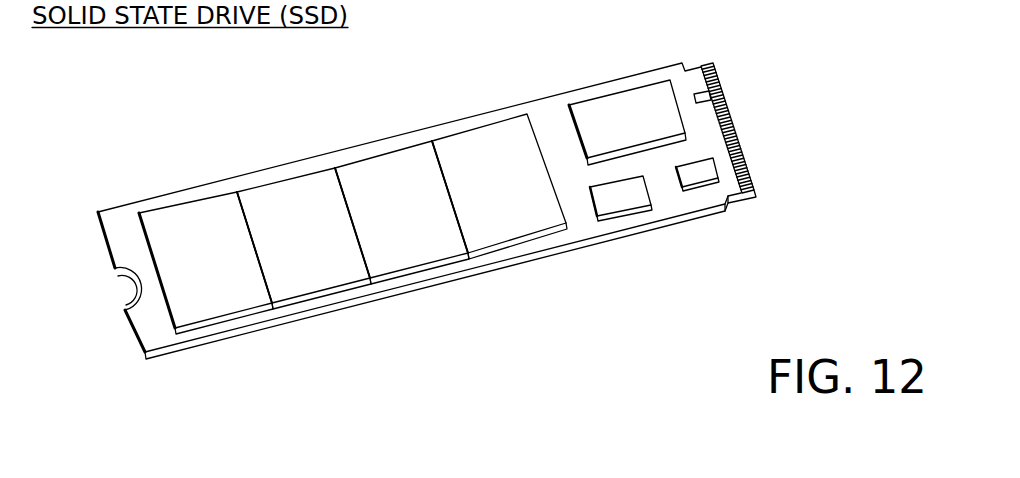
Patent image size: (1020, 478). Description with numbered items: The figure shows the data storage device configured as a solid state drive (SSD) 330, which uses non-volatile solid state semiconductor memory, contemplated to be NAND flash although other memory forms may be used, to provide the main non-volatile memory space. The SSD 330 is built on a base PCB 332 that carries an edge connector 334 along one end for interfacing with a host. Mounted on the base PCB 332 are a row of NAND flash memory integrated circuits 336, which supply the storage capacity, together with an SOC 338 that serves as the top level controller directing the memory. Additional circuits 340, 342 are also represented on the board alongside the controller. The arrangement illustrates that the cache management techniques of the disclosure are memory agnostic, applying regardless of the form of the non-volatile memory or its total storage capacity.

The solid state drive (SSD) 330 is at (182, 104).
The base PCB 332 is at (160, 333).
The edge connector 334 is at (766, 137).
The NAND flash memory integrated circuits 336 is at (390, 175).
The SOC 338 is at (623, 108).
The additional circuits 340 is at (612, 203).
The additional circuits 342 is at (698, 176).